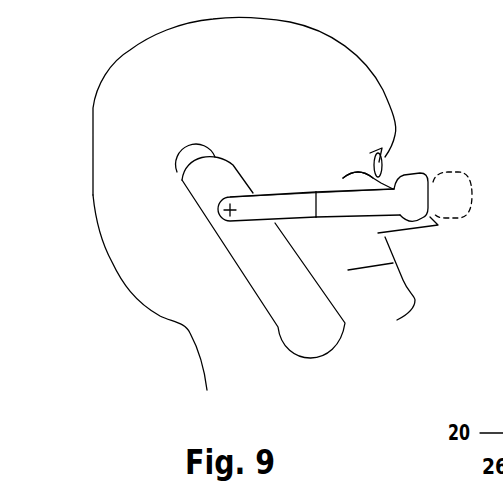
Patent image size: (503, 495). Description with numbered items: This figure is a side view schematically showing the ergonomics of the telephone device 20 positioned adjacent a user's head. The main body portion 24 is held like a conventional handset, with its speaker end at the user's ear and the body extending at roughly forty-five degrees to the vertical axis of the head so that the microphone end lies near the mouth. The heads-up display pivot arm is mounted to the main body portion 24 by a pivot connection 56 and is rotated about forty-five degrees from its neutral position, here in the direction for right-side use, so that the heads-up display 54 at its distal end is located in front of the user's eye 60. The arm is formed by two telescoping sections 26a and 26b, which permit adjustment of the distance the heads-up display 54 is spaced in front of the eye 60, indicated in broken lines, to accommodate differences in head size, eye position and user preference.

The telephone device 20 is at (145, 187).
The main body portion 24 is at (276, 330).
The telescoping section 26a is at (285, 192).
The telescoping section 26b is at (325, 218).
The heads-up display 54 is at (405, 174).
The pivot connection 56 is at (222, 213).
The user's eye 60 is at (343, 178).